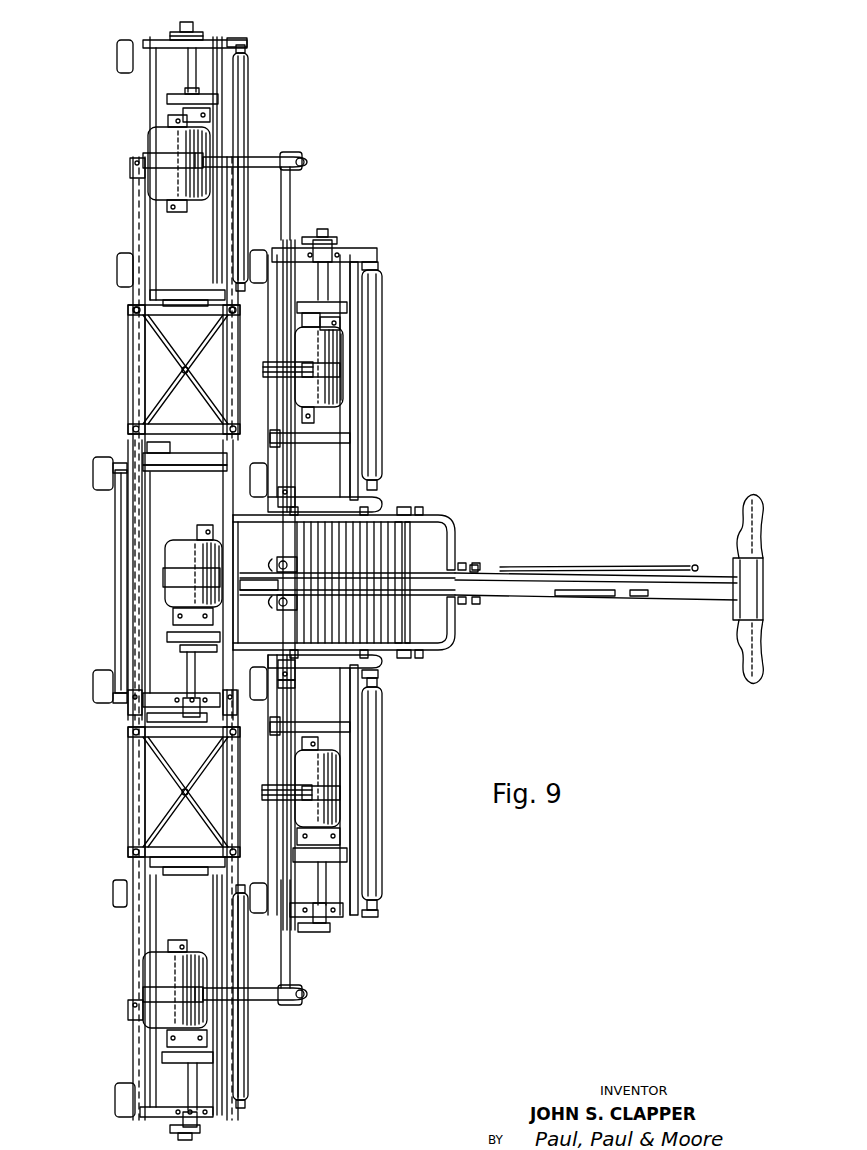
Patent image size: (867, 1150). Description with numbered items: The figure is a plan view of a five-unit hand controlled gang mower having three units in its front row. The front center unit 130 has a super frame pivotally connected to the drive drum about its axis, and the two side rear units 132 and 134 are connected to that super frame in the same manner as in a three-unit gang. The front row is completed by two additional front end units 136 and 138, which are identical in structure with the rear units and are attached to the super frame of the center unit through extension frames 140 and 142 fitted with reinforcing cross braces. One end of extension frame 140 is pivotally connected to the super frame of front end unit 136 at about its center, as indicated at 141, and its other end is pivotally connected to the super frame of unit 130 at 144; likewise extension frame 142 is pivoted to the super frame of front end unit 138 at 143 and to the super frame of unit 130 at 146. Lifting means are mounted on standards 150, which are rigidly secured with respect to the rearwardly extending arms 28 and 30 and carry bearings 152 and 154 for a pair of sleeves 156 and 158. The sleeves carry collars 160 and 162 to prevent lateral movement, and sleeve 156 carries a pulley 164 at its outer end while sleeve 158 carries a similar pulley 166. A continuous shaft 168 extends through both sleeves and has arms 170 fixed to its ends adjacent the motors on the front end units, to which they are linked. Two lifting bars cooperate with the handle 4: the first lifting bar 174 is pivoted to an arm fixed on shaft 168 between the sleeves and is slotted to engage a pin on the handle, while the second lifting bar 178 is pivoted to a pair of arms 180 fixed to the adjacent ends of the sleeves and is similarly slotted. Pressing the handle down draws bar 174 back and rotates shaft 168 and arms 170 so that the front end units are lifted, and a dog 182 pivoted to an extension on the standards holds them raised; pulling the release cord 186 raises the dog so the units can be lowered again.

The handle 4 is at (764, 582).
The rearwardly extending arm 28 is at (448, 650).
The rearwardly extending arm 30 is at (448, 520).
The front center unit 130 is at (107, 620).
The side rear unit 132 is at (393, 283).
The side rear unit 134 is at (395, 875).
The front end unit 136 is at (112, 134).
The front end unit 138 is at (102, 986).
The extension frame 140 is at (135, 352).
The pivotal connection 141 is at (130, 168).
The extension frame 142 is at (135, 800).
The pivotal connection 143 is at (130, 998).
The pivotal connection 144 is at (228, 484).
The pivotal connection 146 is at (138, 702).
The standards 150 is at (400, 515).
The bearing 152 is at (296, 504).
The bearing 154 is at (296, 665).
The sleeve 156 is at (292, 432).
The sleeve 158 is at (292, 727).
The collar 160 is at (292, 488).
The collar 162 is at (294, 680).
The pulley 164 is at (276, 362).
The pulley 166 is at (272, 800).
The continuous shaft 168 is at (293, 200).
The arm 170 is at (277, 155).
The lifting bar 174 is at (548, 600).
The lifting bar 178 is at (500, 572).
The arms 180 is at (280, 558).
The dog 182 is at (262, 580).
The release cord 186 is at (578, 566).